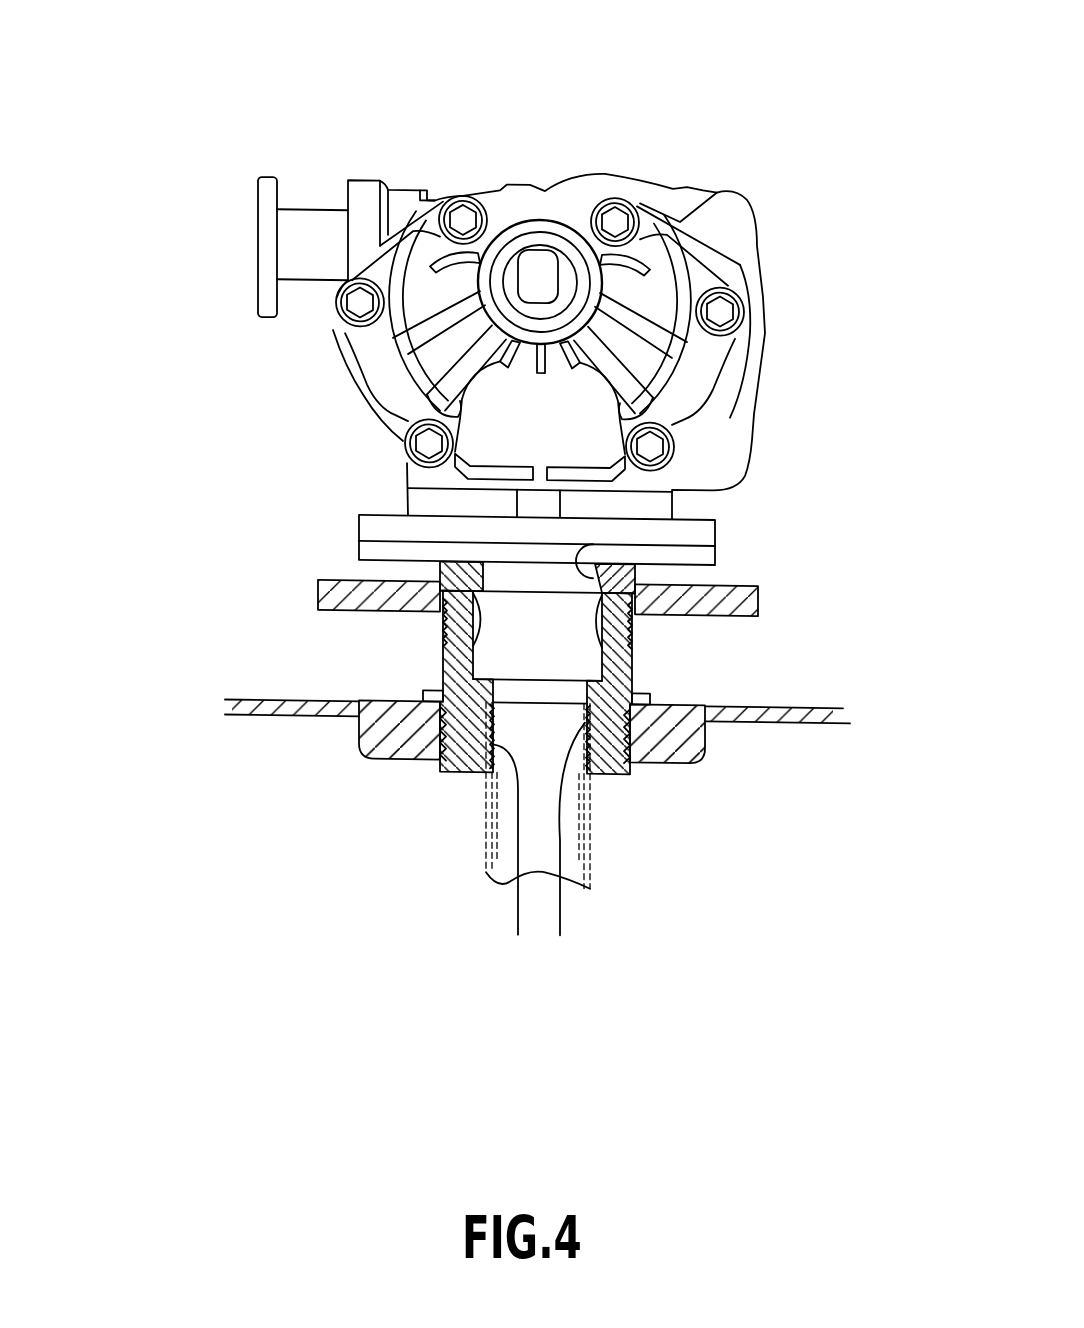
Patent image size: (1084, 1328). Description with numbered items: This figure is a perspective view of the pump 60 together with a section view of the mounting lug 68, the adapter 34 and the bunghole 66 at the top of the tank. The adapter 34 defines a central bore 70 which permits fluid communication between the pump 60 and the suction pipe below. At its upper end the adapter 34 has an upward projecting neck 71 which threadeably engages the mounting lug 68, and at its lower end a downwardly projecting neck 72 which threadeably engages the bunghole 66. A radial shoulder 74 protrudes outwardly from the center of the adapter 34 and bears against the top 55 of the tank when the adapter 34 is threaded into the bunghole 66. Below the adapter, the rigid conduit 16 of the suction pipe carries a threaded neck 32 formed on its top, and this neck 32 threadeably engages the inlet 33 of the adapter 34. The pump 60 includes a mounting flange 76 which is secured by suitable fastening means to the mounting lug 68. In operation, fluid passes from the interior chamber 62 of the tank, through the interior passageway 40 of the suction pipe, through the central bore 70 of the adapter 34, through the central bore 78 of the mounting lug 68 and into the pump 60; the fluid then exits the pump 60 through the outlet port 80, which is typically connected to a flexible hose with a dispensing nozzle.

The rigid conduit 16 is at (703, 797).
The threaded neck 32 is at (518, 935).
The inlet 33 is at (580, 822).
The adapter 34 is at (573, 773).
The interior passageway 40 is at (560, 935).
The top of the tank 55 is at (225, 711).
The pump 60 is at (565, 267).
The interior chamber 62 is at (308, 790).
The bunghole 66 is at (442, 744).
The mounting lug 68 is at (622, 571).
The central bore 70 is at (553, 645).
The upward projecting neck 71 is at (448, 636).
The downwardly projecting neck 72 is at (468, 743).
The radial shoulder 74 is at (428, 697).
The mounting flange 76 is at (385, 532).
The central bore 78 is at (572, 545).
The outlet port 80 is at (538, 277).